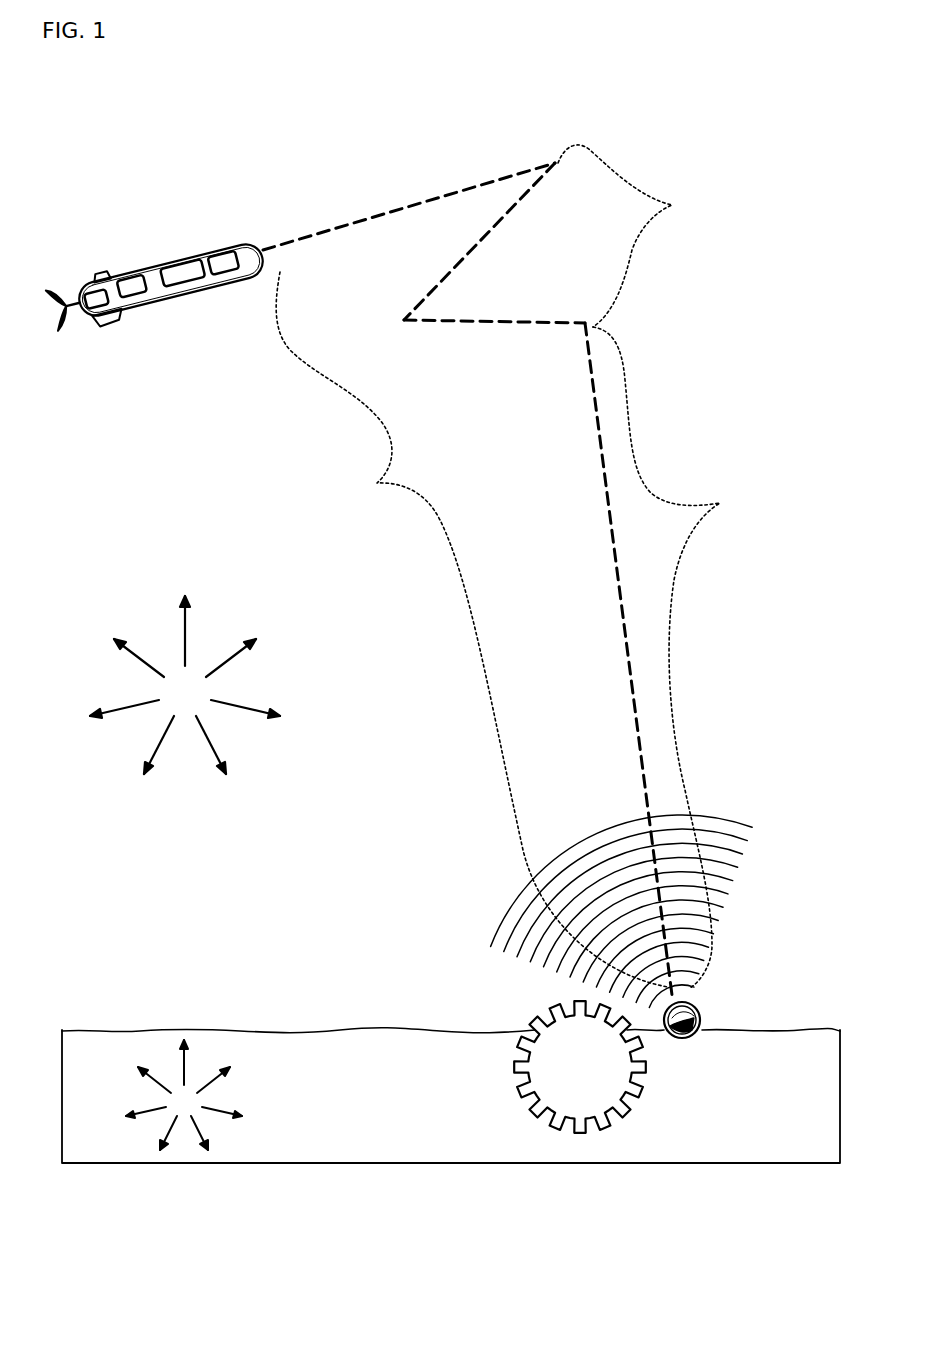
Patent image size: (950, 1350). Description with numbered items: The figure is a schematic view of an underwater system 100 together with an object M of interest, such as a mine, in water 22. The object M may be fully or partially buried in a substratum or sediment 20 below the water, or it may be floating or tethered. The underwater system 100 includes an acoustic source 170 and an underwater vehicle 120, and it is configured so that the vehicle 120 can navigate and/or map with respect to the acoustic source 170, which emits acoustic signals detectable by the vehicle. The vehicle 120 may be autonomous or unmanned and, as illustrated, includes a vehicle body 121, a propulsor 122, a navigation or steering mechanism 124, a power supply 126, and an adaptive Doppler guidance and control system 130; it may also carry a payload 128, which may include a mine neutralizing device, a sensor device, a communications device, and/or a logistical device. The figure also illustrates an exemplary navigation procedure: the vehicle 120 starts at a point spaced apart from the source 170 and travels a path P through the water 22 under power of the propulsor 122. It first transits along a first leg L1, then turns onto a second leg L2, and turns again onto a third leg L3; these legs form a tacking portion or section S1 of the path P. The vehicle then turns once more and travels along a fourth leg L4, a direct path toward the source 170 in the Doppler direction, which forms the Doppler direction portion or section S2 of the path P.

The underwater system 100 is at (523, 82).
The underwater vehicle 120 is at (188, 162).
The vehicle body 121 is at (223, 290).
The propulsor 122 is at (47, 288).
The navigation or steering mechanism 124 is at (95, 270).
The power supply 126 is at (127, 278).
The payload 128 is at (177, 263).
The adaptive Doppler guidance and control system 130 is at (227, 248).
The acoustic source 170 is at (707, 1008).
The substratum or sediment 20 is at (451, 1095).
The water 22 is at (185, 685).
The first leg L1 is at (405, 208).
The second leg L2 is at (482, 246).
The third leg L3 is at (507, 325).
The fourth leg L4 is at (612, 546).
The tacking portion or section S1 is at (675, 202).
The Doppler direction portion or section S2 is at (725, 505).
The path P is at (377, 483).
The object of interest M is at (516, 1079).